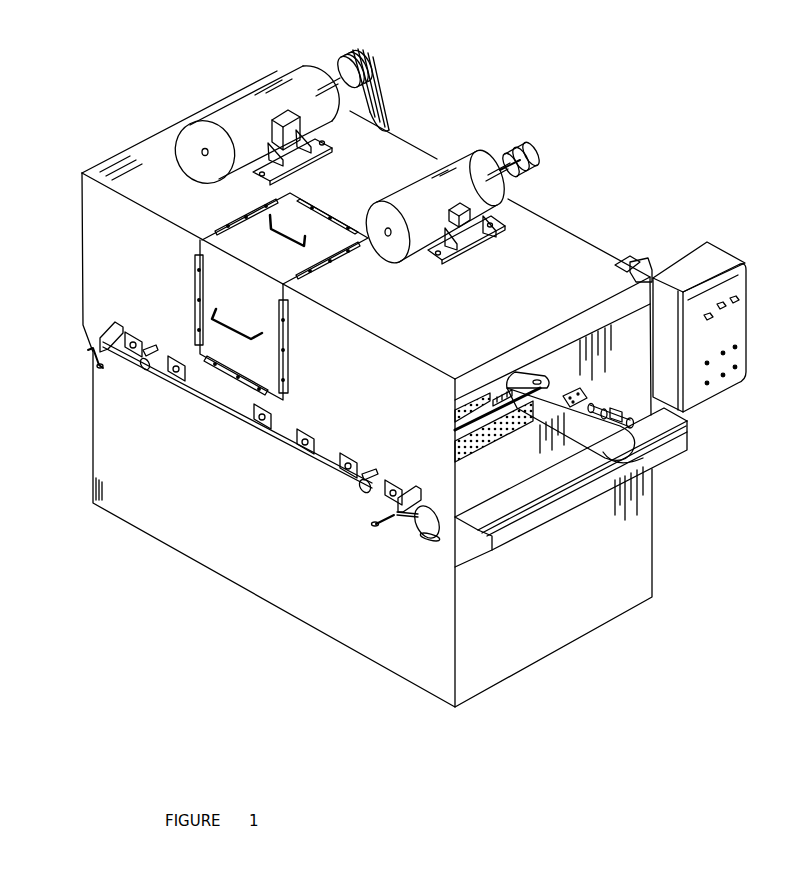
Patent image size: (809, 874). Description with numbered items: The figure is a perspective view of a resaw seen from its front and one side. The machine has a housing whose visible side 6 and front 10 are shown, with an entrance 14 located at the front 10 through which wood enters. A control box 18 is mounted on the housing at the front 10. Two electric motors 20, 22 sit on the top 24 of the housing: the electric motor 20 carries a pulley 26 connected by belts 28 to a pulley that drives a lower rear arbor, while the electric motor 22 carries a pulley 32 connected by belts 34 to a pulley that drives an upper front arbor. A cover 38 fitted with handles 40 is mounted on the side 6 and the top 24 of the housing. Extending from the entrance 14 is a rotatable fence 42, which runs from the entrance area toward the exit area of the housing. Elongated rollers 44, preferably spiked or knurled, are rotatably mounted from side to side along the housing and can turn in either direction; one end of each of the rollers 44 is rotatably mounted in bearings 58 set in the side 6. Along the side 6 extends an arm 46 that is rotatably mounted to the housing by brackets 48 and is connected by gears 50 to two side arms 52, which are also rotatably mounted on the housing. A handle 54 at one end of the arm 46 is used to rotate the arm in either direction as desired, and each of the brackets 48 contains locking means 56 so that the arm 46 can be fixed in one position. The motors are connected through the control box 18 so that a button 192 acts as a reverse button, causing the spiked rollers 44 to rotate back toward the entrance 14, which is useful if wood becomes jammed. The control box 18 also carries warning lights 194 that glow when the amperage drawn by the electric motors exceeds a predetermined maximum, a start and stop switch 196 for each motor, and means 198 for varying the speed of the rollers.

The side 6 is at (173, 515).
The front 10 is at (560, 617).
The entrance 14 is at (467, 480).
The control box 18 is at (683, 264).
The electric motor 20 is at (307, 62).
The electric motor 22 is at (473, 157).
The top 24 is at (162, 143).
The pulley 26 is at (343, 57).
The belts 28 is at (380, 90).
The pulley 32 is at (507, 153).
The belts 34 is at (527, 184).
The cover 38 is at (308, 215).
The handles 40 is at (284, 229).
The rotatable fence 42 is at (584, 433).
The elongated rollers 44 is at (487, 442).
The arm 46 is at (220, 407).
The brackets 48 is at (115, 325).
The gears 50 is at (142, 365).
The side arms 52 is at (455, 442).
The handle 54 is at (423, 543).
The locking means 56 is at (98, 368).
The bearings 58 is at (170, 387).
The button 192 is at (736, 330).
The warning lights 194 is at (708, 313).
The start and stop switch 196 is at (735, 369).
The means for varying the speed of the rollers 198 is at (736, 298).